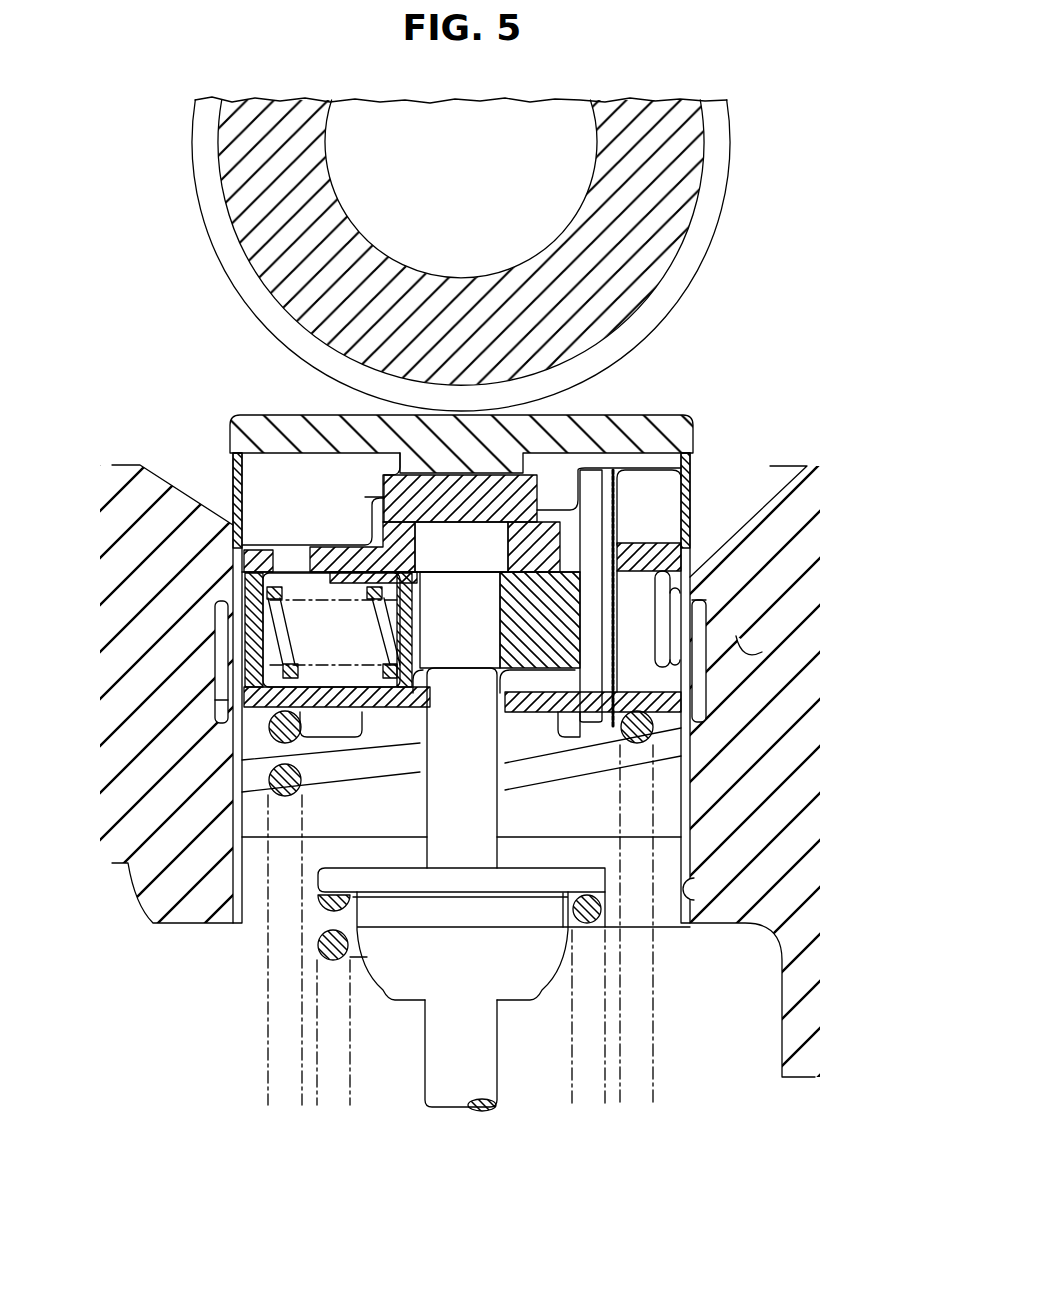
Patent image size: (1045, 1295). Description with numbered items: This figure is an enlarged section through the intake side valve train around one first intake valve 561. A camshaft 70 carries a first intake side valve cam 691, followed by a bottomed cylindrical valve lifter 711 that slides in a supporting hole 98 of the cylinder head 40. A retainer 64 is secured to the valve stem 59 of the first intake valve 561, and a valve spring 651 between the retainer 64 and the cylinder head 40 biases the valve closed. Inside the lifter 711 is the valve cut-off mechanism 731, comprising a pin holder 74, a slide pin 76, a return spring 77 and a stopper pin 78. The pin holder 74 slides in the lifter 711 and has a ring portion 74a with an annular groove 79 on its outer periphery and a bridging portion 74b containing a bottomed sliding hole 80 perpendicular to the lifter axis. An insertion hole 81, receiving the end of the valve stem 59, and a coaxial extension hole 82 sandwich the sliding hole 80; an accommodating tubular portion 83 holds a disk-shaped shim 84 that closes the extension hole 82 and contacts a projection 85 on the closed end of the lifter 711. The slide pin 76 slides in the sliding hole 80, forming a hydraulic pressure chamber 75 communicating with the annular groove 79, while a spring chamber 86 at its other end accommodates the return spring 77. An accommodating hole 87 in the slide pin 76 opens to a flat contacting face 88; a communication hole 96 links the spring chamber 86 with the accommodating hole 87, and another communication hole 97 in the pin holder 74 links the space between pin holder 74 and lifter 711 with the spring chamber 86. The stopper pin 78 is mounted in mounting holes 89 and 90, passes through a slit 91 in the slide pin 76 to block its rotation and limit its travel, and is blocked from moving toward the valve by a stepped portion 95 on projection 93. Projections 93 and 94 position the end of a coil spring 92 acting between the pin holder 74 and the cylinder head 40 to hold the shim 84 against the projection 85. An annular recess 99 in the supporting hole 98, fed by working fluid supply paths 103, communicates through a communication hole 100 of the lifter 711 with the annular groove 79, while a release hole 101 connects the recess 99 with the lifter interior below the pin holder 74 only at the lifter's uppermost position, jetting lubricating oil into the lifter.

The first intake side valve cam 691 is at (722, 190).
The camshaft 70 is at (655, 243).
The valve lifter 711 is at (657, 418).
The stopper pin 78 is at (672, 460).
The shim 84 is at (292, 432).
The projection 85 is at (563, 418).
The valve cut-off mechanism 731 is at (287, 528).
The accommodating tubular portion 83 is at (368, 510).
The extension hole 82 is at (500, 506).
The sliding hole 80 is at (500, 585).
The slide pin 76 is at (585, 520).
The mounting hole 89 is at (603, 692).
The mounting hole 90 is at (615, 545).
The release hole 101 is at (692, 722).
The cylinder head 40 is at (775, 490).
The coil spring 92 is at (126, 862).
The working fluid supply path 103 is at (762, 650).
The supporting hole 98 is at (678, 884).
The communication hole 100 is at (214, 640).
The annular recess 99 is at (214, 700).
The annular groove 79 is at (215, 600).
The slit 91 is at (707, 690).
The hydraulic pressure chamber 75 is at (708, 592).
The communication hole 96 is at (412, 640).
The contacting face 88 is at (530, 672).
The communication hole 97 is at (320, 617).
The pin holder 74 is at (228, 708).
The accommodating hole 87 is at (480, 640).
The insertion hole 81 is at (497, 706).
The stepped portion 95 is at (580, 740).
The return spring 77 is at (392, 700).
The spring chamber 86 is at (332, 740).
The projection 93 is at (626, 732).
The projection 94 is at (222, 772).
The bridging portion 74b is at (513, 718).
The ring portion 74a is at (693, 745).
The retainer 64 is at (320, 880).
The valve spring 651 is at (590, 930).
The valve stem 59 is at (428, 1030).
The first intake valve 561 is at (515, 1085).